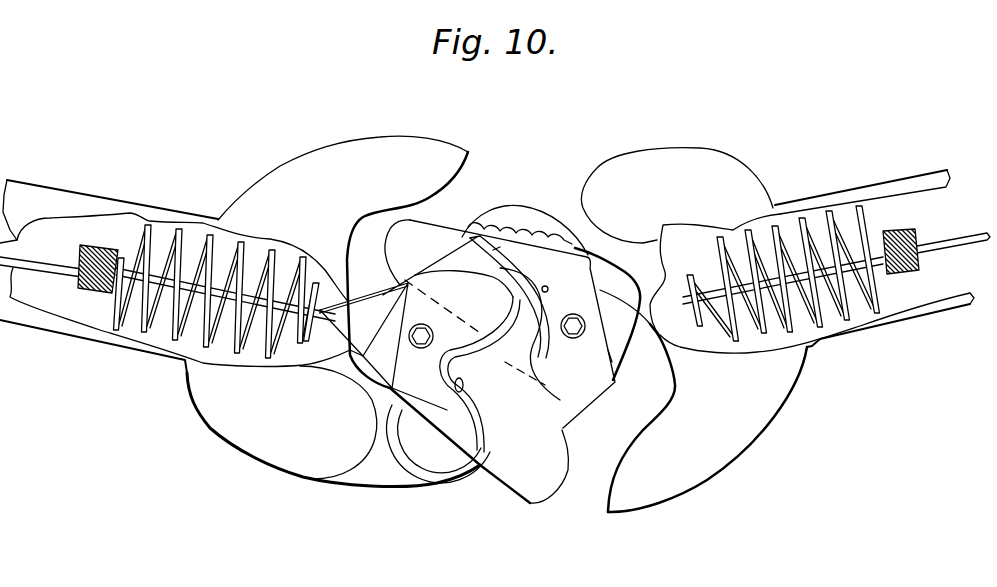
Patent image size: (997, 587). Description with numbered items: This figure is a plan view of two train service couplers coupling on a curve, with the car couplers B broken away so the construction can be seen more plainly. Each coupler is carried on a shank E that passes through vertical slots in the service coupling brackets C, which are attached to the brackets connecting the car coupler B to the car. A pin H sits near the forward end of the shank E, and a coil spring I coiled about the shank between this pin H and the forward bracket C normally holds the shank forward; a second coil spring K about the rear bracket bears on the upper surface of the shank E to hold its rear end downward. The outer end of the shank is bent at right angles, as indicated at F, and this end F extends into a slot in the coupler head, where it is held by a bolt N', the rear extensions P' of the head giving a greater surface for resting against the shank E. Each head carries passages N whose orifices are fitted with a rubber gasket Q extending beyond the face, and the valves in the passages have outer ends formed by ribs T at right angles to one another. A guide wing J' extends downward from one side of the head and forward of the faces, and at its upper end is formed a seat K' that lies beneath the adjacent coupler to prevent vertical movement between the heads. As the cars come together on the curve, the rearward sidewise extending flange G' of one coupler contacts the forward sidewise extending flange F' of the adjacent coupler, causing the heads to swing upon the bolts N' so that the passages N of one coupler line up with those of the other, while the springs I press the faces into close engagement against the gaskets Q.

The car coupler B is at (277, 190).
The shank E is at (50, 255).
The service coupling bracket C is at (80, 282).
The coil spring I is at (242, 357).
The pin H is at (310, 355).
The bent end of shank F is at (508, 312).
The extensions P' is at (483, 341).
The guide wing J' is at (479, 361).
The rearward sidewise extending flange G' is at (499, 340).
The forward sidewise extending flange F' is at (503, 347).
The coil spring K is at (475, 359).
The rubber gasket Q is at (548, 287).
The ribs T is at (517, 320).
The passage or conduit N is at (580, 337).
The bolt N' is at (420, 348).
The seat K' is at (480, 374).